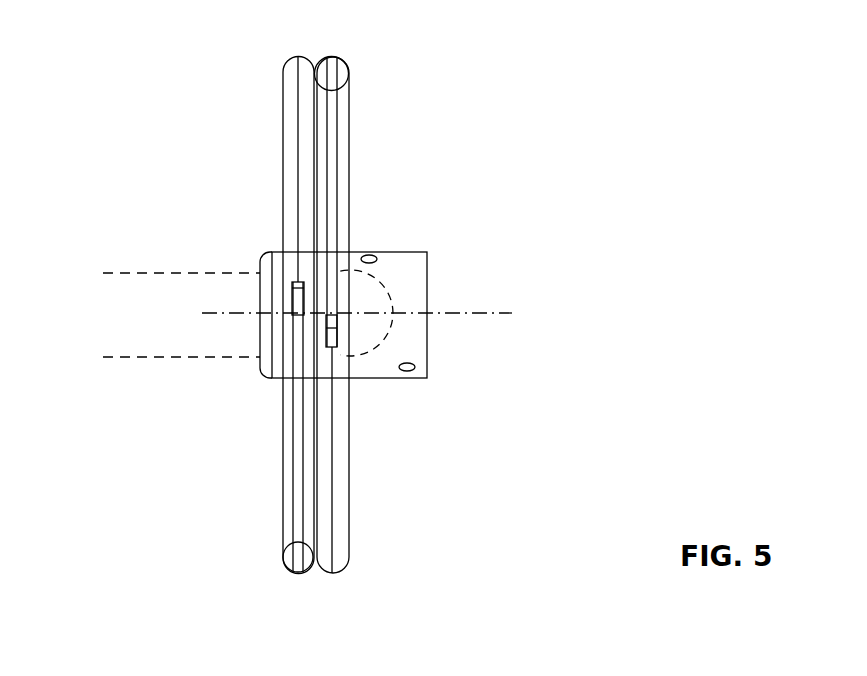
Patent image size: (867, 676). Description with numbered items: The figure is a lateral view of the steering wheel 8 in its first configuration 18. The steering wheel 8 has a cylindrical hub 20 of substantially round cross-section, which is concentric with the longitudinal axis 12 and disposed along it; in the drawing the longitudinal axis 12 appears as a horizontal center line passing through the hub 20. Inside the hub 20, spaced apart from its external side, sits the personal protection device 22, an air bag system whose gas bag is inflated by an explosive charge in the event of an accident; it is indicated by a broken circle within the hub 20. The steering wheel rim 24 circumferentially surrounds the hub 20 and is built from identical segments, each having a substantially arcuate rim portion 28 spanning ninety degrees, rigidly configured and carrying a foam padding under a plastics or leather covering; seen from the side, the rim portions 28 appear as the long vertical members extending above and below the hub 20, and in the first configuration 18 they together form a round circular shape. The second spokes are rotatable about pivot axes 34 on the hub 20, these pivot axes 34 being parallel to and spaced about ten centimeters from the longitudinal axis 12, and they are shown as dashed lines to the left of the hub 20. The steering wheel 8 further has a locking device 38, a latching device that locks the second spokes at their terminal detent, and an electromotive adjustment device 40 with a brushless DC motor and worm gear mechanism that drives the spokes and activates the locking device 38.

The steering wheel 8 is at (502, 83).
The longitudinal axis 12 is at (477, 313).
The first configuration 18 is at (118, 128).
The hub 20 is at (378, 378).
The personal protection device 22 is at (380, 297).
The steering wheel rim 24 is at (290, 88).
The rim portion 28 is at (290, 147).
The pivot axis 34 is at (138, 272).
The locking device 38 is at (370, 254).
The electromotive adjustment device 40 is at (408, 372).